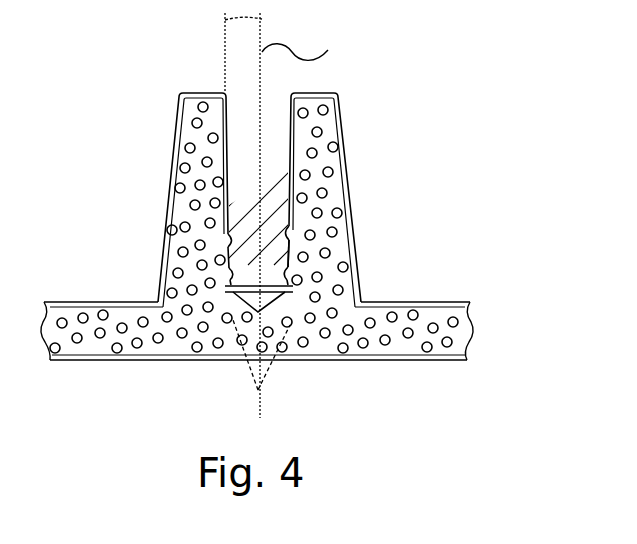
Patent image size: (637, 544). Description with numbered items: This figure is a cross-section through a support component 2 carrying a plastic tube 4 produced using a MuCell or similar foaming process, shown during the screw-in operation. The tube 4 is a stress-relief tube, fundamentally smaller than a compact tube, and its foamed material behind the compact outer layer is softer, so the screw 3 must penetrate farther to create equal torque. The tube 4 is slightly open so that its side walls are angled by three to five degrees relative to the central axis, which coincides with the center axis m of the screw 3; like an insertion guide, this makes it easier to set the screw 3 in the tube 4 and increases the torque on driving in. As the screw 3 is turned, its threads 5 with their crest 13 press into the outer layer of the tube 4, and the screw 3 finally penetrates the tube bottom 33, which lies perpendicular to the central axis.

The support component 2 is at (470, 333).
The screw 3 is at (305, 209).
The tube 4 is at (197, 130).
The threads 5 is at (227, 238).
The crest of the thread 13 is at (292, 229).
The tube bottom 33 is at (233, 293).
The center axis of the screw m is at (309, 49).